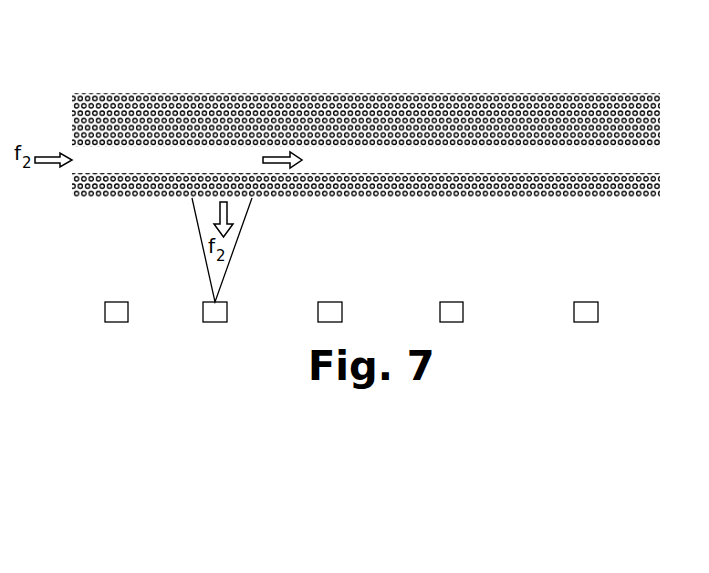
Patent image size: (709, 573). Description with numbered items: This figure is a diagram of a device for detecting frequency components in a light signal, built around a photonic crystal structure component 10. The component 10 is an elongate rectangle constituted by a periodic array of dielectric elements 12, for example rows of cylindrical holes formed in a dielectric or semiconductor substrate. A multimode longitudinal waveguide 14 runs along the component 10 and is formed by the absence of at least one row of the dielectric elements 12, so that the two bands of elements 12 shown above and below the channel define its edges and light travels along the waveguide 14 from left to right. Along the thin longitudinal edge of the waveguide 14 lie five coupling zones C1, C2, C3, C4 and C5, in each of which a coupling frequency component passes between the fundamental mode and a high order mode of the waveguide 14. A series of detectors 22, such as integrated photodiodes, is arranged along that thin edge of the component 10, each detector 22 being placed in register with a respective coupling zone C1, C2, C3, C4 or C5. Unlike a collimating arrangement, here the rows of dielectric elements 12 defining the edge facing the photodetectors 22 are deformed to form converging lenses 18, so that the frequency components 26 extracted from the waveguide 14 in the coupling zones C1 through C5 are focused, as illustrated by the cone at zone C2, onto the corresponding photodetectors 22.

The photonic crystal structure component 10 is at (484, 88).
The dielectric elements 12 is at (625, 96).
The multimode longitudinal waveguide 14 is at (87, 157).
The converging lens 18 is at (235, 196).
The detectors 22 is at (117, 312).
The frequency components 26 is at (207, 282).
The coupling zone C1 is at (90, 198).
The coupling zone C2 is at (185, 198).
The coupling zone C3 is at (325, 198).
The coupling zone C4 is at (445, 198).
The coupling zone C5 is at (592, 198).